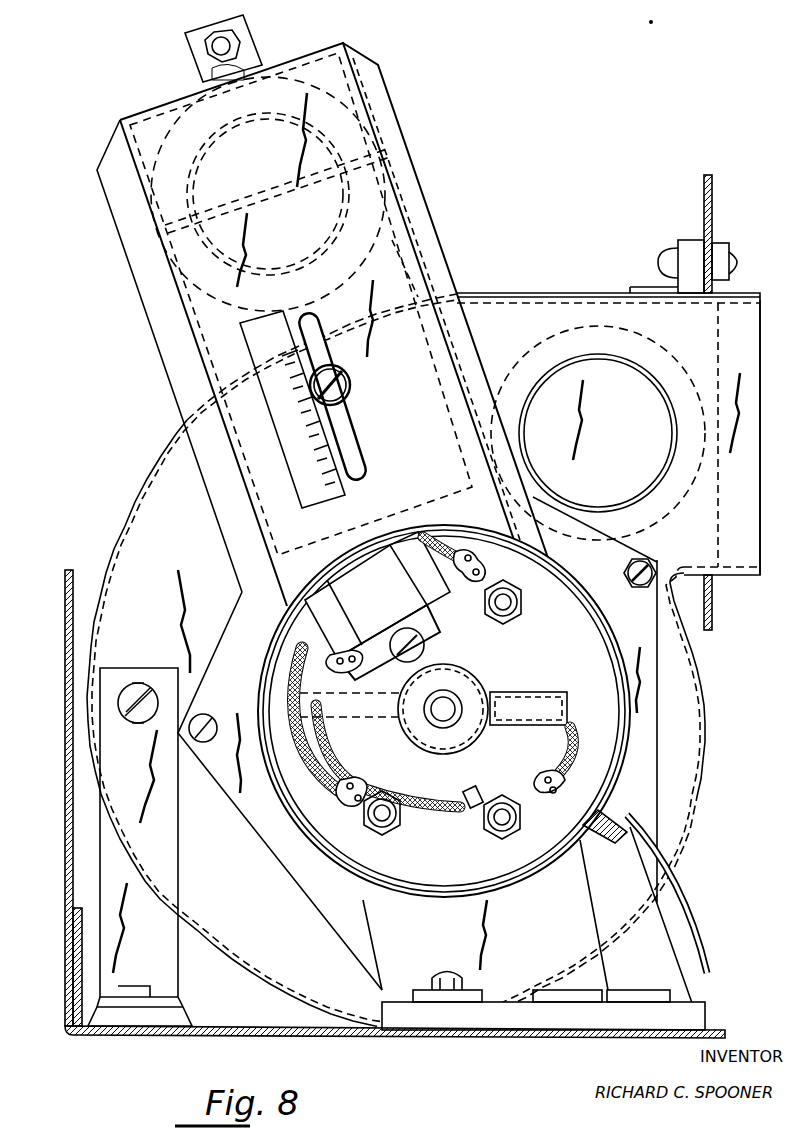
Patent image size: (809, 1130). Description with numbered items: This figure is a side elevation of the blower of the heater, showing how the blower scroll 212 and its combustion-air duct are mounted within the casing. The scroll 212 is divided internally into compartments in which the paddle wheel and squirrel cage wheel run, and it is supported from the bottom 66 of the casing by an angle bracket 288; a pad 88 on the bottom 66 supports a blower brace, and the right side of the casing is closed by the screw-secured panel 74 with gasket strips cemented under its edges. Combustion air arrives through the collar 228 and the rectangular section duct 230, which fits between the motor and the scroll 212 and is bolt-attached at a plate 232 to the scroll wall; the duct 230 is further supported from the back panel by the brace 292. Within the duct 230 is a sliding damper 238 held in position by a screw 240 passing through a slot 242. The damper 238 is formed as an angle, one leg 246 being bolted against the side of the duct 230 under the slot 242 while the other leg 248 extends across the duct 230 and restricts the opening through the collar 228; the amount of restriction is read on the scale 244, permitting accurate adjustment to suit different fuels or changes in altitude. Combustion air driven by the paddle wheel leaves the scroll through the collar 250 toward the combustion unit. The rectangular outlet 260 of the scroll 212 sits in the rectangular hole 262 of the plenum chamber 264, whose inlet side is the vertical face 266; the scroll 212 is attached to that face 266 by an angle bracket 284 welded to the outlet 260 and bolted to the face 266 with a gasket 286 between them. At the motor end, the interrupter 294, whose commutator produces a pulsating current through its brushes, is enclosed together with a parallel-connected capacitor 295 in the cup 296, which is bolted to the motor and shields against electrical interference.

The bottom 66 is at (190, 1040).
The panel 74 is at (65, 831).
The pad 88 is at (175, 1015).
The scroll 212 is at (128, 516).
The collar 228 is at (195, 153).
The rectangular section duct 230 is at (405, 196).
The plate 232 is at (282, 850).
The sliding damper 238 is at (178, 327).
The screw 240 is at (345, 383).
The slot 242 is at (357, 440).
The scale 244 is at (330, 488).
The leg 246 is at (418, 248).
The leg 248 is at (400, 145).
The collar 250 is at (648, 378).
The rectangular outlet 260 is at (744, 292).
The rectangular hole 262 is at (712, 603).
The plenum chamber 264 is at (760, 462).
The vertical face 266 is at (714, 212).
The angle bracket 284 is at (668, 256).
The gasket 286 is at (690, 240).
The angle bracket 288 is at (162, 815).
The brace 292 is at (262, 56).
The interrupter 294 is at (572, 652).
The capacitor 295 is at (440, 600).
The cup 296 is at (258, 705).